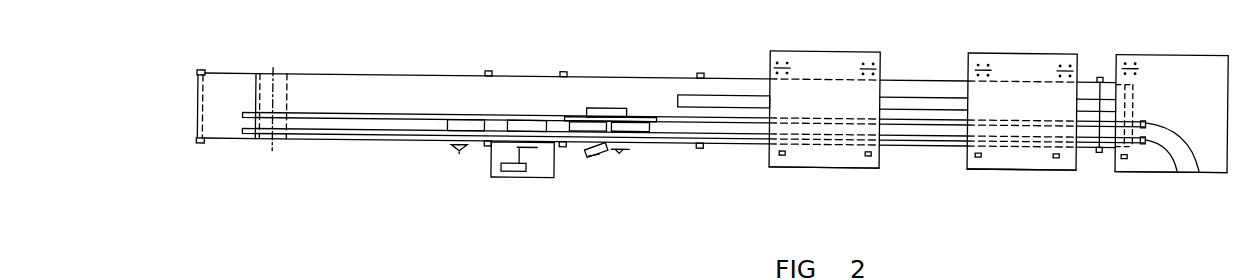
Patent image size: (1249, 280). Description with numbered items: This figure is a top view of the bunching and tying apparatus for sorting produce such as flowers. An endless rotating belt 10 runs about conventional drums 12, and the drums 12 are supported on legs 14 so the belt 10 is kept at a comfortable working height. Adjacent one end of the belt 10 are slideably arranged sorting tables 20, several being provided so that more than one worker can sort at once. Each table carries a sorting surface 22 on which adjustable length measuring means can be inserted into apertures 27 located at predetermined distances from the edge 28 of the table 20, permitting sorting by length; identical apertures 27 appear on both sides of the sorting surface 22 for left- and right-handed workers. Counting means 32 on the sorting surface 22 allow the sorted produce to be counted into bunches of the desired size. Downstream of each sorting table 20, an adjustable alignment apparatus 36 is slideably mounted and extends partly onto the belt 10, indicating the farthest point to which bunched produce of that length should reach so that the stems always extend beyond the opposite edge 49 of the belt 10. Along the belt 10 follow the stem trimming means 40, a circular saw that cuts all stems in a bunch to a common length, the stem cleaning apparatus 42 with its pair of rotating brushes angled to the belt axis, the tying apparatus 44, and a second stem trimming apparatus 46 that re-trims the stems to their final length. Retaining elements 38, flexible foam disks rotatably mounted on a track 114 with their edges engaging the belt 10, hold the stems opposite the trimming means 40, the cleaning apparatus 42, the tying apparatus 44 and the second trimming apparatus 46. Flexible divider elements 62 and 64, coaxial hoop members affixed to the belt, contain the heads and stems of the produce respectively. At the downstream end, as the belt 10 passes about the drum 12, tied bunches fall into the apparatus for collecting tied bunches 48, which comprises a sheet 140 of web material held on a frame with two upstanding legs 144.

The endless rotating belt 10 is at (365, 90).
The drum 12 is at (281, 77).
The leg 14 is at (288, 139).
The sorting table 20 is at (870, 45).
The sorting surface 22 is at (862, 91).
The aperture 27 is at (868, 55).
The edge of the table 28 is at (820, 161).
The counting means 32 is at (783, 152).
The adjustable alignment apparatus 36 is at (729, 94).
The retaining element 38 is at (462, 117).
The stem trimming means 40 is at (623, 147).
The stem cleaning apparatus 42 is at (597, 150).
The tying apparatus 44 is at (538, 166).
The second stem trimming apparatus 46 is at (448, 148).
The apparatus for collecting tied bunches 48 is at (217, 67).
The opposite edge of belt 49 is at (677, 139).
The divider element 62 is at (1193, 161).
The divider element 64 is at (1177, 161).
The track 114 is at (567, 113).
The sheet 140 is at (229, 124).
The upstanding leg 144 is at (199, 144).